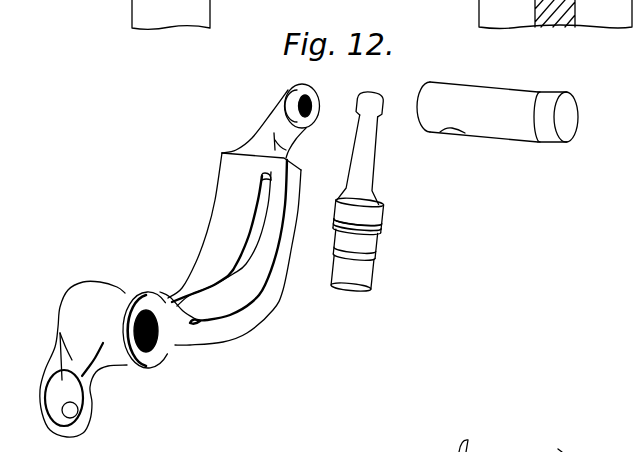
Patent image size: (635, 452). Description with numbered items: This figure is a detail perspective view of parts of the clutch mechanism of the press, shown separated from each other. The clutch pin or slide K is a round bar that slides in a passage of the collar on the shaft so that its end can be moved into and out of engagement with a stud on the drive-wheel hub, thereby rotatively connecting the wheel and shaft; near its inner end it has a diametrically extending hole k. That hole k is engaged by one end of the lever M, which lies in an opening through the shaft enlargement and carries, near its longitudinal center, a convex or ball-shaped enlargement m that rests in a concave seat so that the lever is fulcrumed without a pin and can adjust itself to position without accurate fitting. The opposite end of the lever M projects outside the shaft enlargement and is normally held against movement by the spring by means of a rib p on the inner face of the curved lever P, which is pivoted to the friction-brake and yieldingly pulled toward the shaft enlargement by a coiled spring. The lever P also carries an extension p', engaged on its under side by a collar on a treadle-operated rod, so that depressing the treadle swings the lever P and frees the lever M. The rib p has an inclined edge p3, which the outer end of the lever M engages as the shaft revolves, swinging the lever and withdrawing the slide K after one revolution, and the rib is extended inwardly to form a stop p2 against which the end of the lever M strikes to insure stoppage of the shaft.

The curved lever P is at (180, 260).
The rib p is at (221, 239).
The stop p2 is at (262, 181).
The inclined edge p3 is at (218, 284).
The extension p' is at (78, 379).
The lever M is at (372, 193).
The ball-shaped enlargement m is at (394, 203).
The clutch pin or slide K is at (497, 116).
The hole k is at (455, 132).